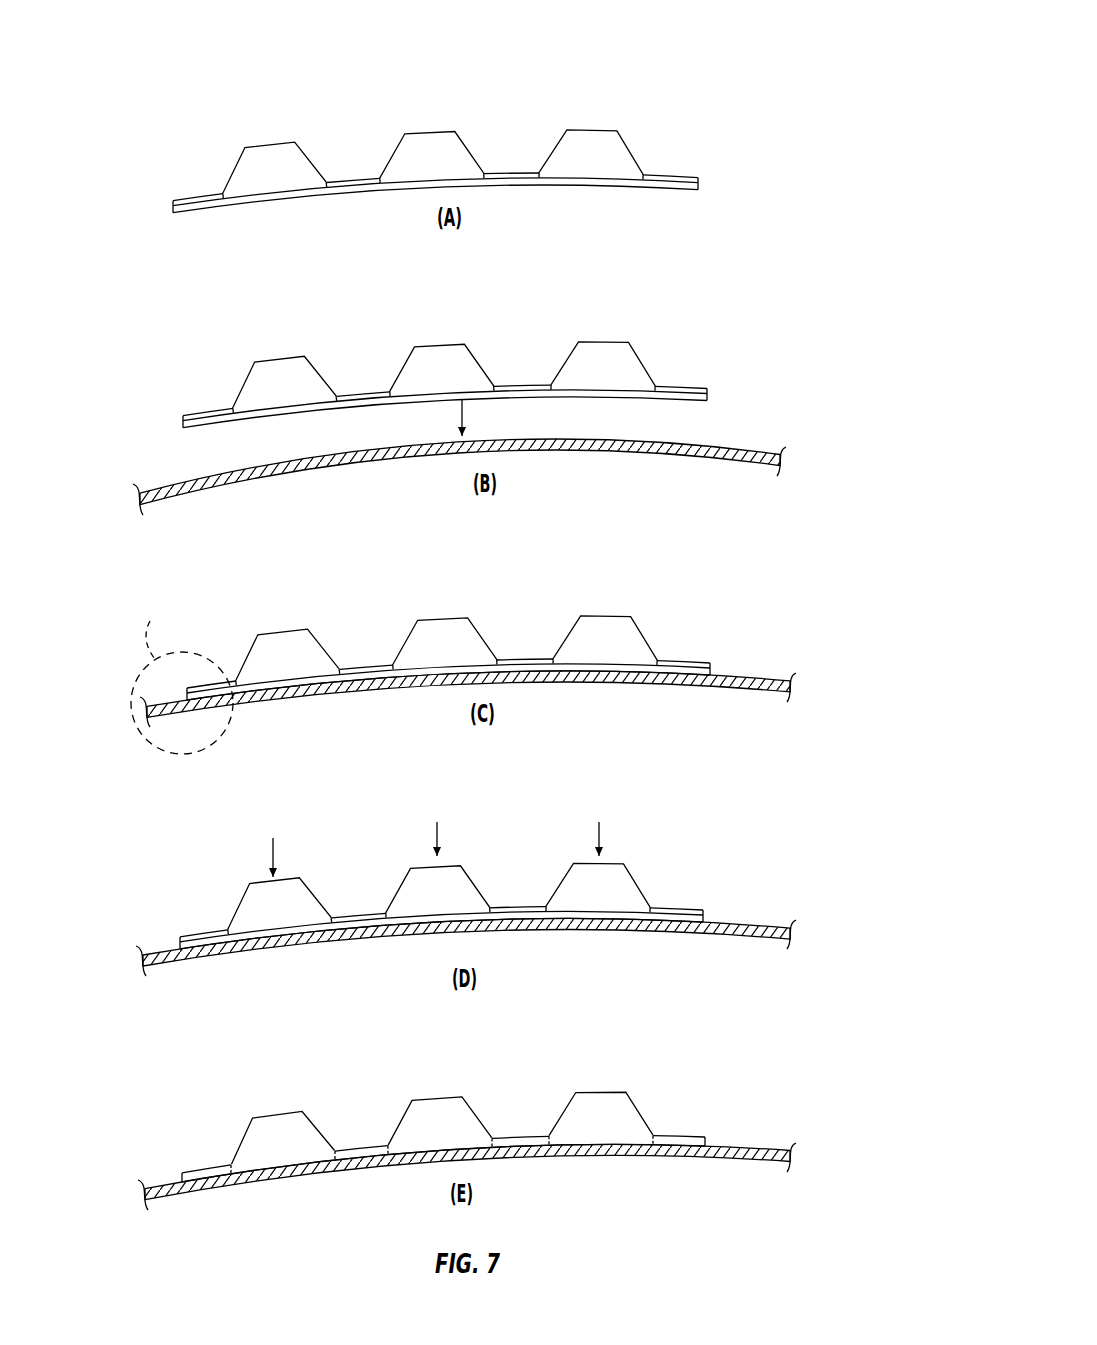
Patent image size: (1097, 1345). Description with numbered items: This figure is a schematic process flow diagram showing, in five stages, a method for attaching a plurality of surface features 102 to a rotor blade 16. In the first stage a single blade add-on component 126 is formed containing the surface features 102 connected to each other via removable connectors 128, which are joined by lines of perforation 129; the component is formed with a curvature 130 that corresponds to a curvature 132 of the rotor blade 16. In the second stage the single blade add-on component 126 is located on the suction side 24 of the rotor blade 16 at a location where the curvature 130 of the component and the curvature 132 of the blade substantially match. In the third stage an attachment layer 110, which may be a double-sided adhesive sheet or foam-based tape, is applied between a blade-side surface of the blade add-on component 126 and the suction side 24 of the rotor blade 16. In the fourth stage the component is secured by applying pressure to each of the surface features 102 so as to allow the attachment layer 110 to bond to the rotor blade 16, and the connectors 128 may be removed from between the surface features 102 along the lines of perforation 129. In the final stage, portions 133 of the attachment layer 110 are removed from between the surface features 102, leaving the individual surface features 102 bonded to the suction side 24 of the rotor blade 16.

The rotor blade 16 is at (766, 451).
The suction side 24 is at (202, 478).
The surface features 102 is at (231, 172).
The attachment layer 110 is at (184, 703).
The single blade add-on component 126 is at (496, 491).
The connectors 128 is at (335, 193).
The lines of perforation 129 is at (378, 181).
The curvature 130 is at (666, 190).
The curvature 132 is at (246, 481).
The portions 133 is at (201, 1174).